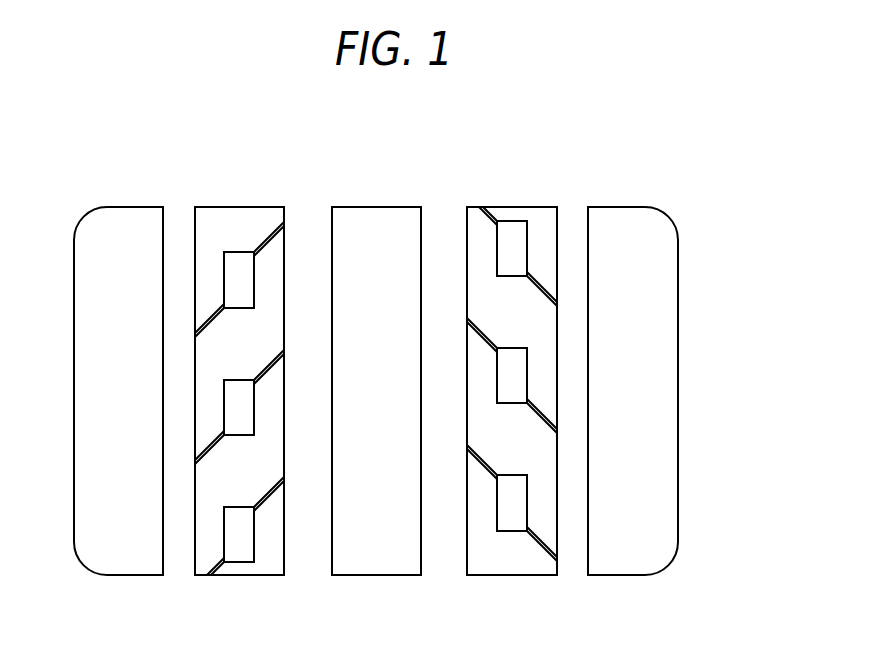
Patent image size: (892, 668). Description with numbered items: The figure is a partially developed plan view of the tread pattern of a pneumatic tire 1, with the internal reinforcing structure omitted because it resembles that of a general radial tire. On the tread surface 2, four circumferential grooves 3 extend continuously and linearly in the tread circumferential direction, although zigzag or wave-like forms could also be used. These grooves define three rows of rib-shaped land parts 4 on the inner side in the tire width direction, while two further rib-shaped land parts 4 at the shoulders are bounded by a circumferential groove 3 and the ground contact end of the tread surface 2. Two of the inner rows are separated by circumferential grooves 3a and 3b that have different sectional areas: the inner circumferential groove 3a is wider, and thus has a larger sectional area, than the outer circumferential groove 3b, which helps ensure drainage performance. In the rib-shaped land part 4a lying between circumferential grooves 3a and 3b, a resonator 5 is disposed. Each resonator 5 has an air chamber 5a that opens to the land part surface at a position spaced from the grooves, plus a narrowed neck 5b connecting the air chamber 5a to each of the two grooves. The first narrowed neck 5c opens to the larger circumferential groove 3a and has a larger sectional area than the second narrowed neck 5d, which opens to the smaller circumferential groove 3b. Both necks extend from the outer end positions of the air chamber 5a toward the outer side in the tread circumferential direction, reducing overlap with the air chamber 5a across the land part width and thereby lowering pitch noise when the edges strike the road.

The pneumatic tire 1 is at (663, 163).
The tread surface 2 is at (680, 218).
The circumferential groove 3 is at (375, 424).
The circumferential groove 3a is at (305, 577).
The circumferential groove 3b is at (178, 577).
The rib-shaped land part 4 is at (371, 204).
The rib-shaped land part 4a is at (508, 204).
The resonator 5 is at (340, 130).
The air chamber 5a is at (236, 257).
The narrowed neck 5b is at (452, 353).
The first narrowed neck 5c is at (265, 238).
The second narrowed neck 5d is at (212, 317).